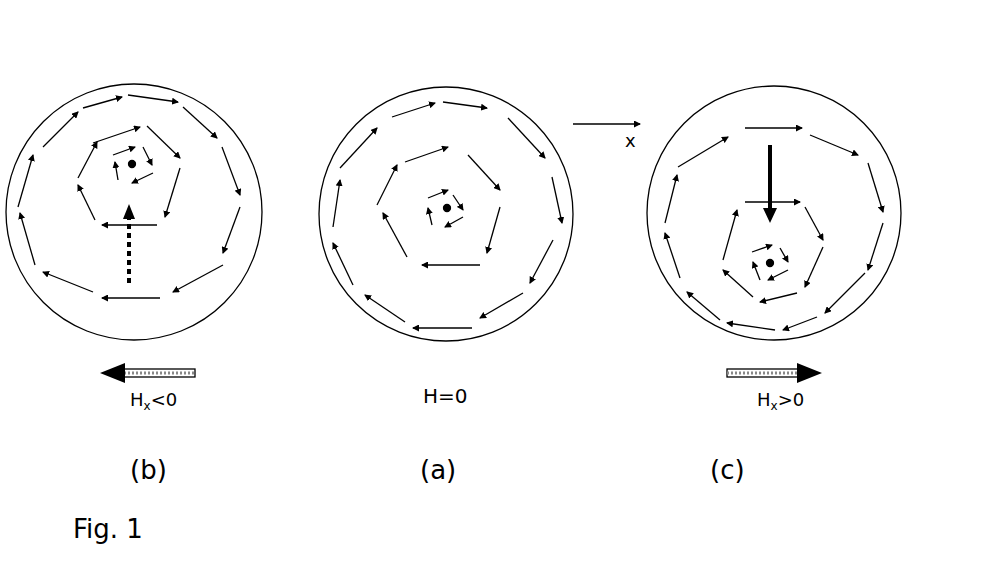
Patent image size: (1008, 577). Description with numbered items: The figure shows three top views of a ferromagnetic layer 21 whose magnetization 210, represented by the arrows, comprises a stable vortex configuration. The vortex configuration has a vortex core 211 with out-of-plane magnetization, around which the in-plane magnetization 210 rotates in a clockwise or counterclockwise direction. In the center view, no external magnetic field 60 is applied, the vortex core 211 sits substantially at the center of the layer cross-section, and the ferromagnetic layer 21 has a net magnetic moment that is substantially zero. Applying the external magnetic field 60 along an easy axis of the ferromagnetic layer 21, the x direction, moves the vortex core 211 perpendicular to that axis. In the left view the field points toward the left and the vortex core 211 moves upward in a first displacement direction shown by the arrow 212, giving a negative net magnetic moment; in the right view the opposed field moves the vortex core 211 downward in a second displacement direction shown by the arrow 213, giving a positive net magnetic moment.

The ferromagnetic layer 21 is at (235, 290).
The magnetization 210 is at (197, 122).
The vortex core 211 is at (132, 164).
The arrow 212 is at (103, 243).
The arrow 213 is at (745, 184).
The external magnetic field 60 is at (461, 375).